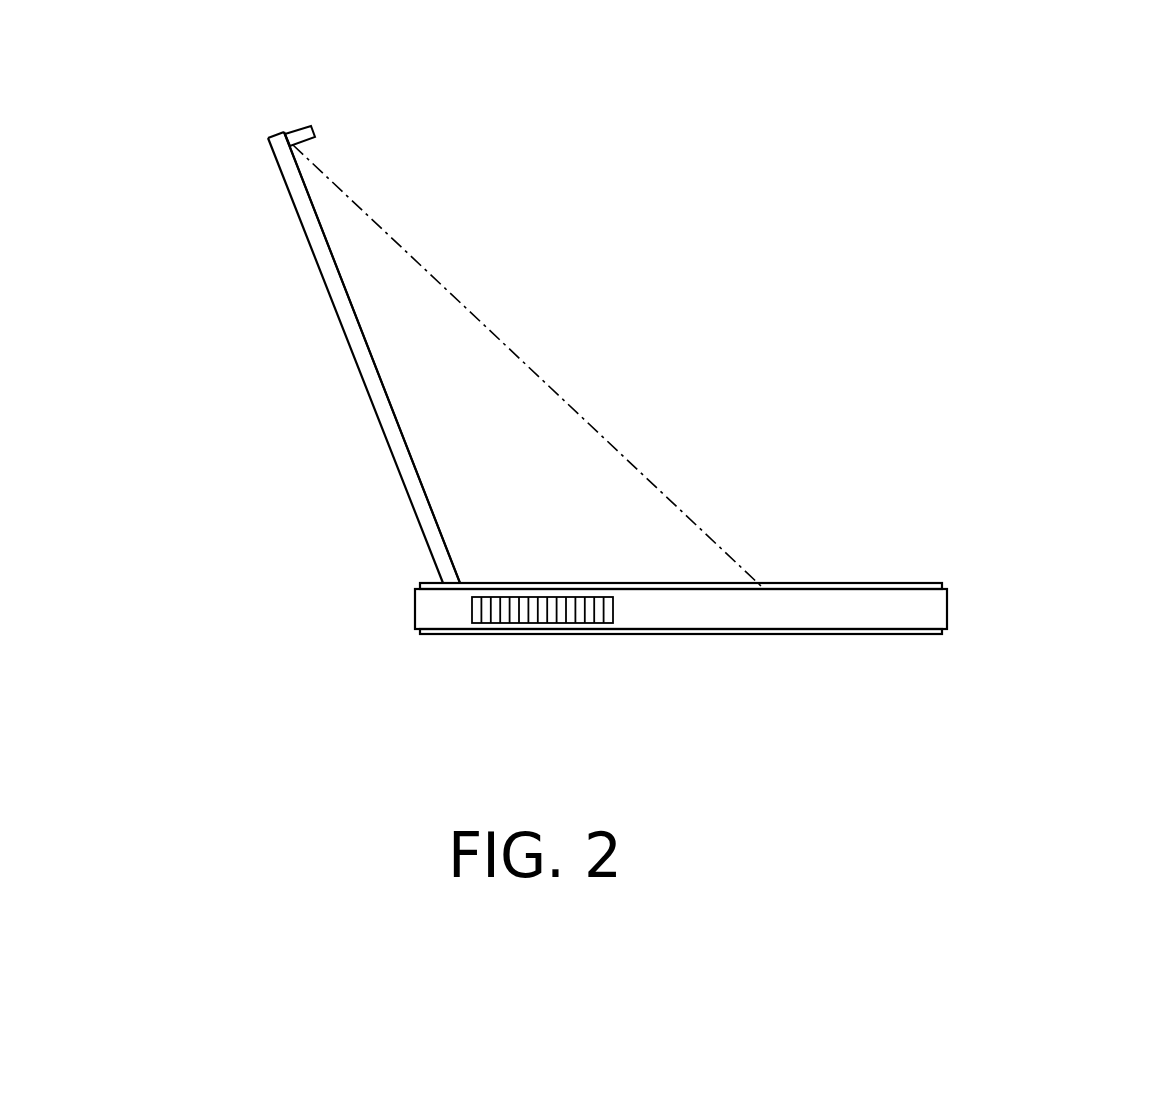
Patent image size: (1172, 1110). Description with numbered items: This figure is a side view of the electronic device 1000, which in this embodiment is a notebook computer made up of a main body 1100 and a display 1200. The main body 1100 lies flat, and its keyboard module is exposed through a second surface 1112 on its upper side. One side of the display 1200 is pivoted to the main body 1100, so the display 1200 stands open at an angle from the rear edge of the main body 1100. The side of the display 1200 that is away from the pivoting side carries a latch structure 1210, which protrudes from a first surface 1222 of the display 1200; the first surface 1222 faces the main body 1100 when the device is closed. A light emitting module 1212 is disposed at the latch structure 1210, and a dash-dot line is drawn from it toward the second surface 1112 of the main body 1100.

The electronic device 1000 is at (1133, 753).
The main body 1100 is at (930, 613).
The second surface 1112 is at (818, 575).
The display 1200 is at (333, 280).
The latch structure 1210 is at (317, 134).
The light emitting module 1212 is at (288, 122).
The first surface 1222 is at (327, 243).